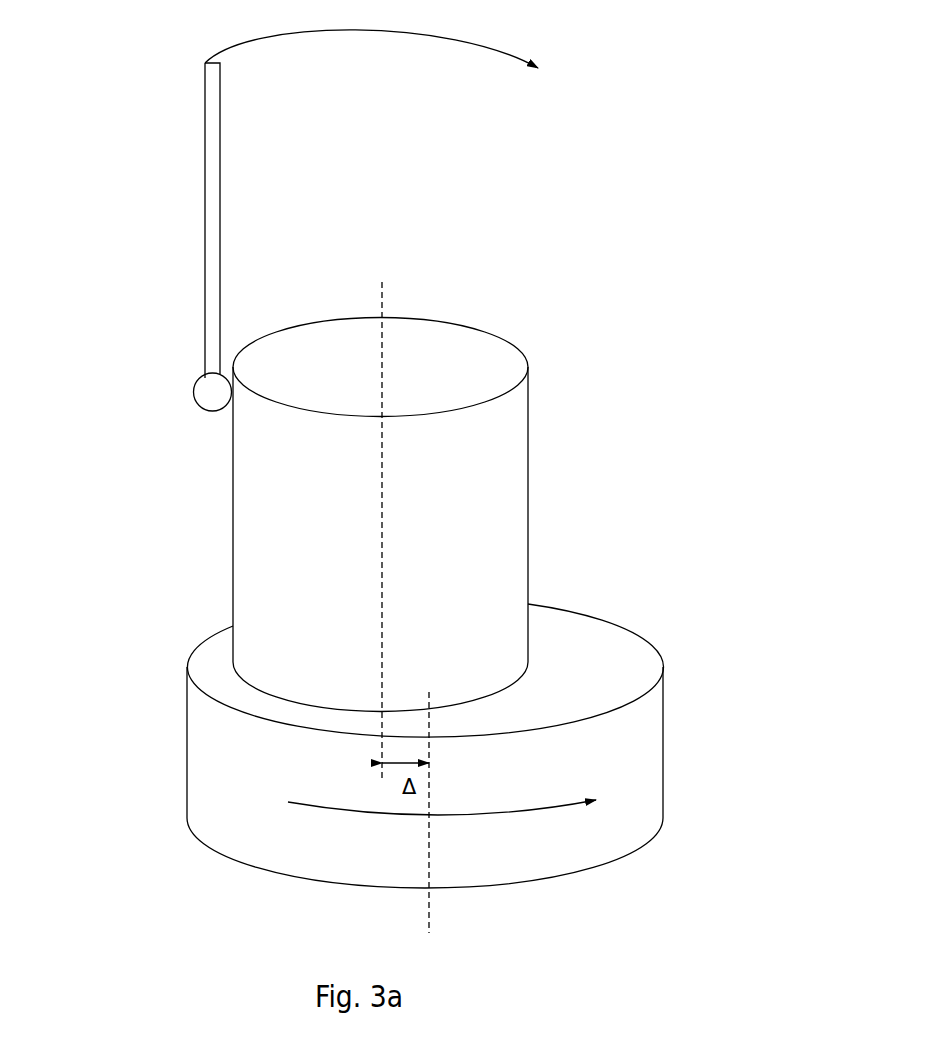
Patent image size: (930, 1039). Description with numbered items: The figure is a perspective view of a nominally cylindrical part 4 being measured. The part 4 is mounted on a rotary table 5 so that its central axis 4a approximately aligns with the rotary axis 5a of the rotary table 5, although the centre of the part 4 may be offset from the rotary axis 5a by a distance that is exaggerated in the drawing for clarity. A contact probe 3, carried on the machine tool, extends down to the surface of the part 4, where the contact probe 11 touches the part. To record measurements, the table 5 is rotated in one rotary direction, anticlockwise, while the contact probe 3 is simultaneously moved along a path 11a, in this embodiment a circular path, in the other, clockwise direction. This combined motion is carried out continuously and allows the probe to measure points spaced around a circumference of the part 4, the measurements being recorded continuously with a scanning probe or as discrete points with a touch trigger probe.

The contact probe 3 is at (221, 222).
The contact probe 11 is at (196, 390).
The path 11a is at (353, 32).
The part 4 is at (300, 498).
The central axis 4a is at (384, 295).
The rotary table 5 is at (180, 743).
The rotary axis 5a is at (437, 904).